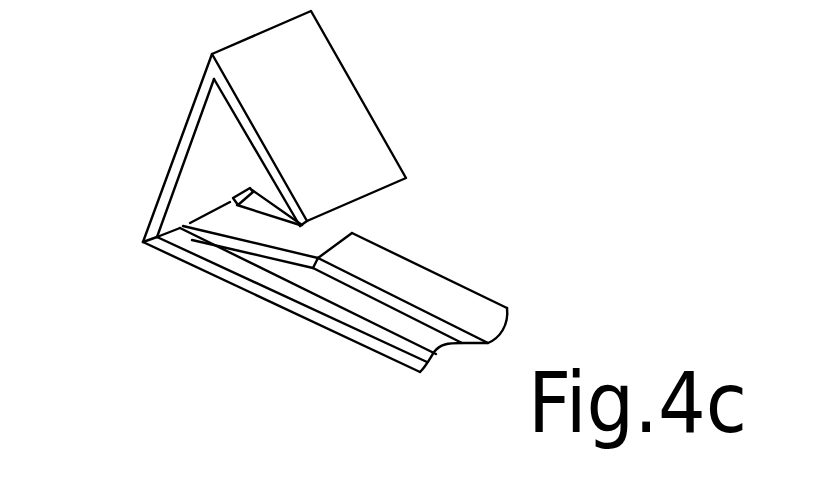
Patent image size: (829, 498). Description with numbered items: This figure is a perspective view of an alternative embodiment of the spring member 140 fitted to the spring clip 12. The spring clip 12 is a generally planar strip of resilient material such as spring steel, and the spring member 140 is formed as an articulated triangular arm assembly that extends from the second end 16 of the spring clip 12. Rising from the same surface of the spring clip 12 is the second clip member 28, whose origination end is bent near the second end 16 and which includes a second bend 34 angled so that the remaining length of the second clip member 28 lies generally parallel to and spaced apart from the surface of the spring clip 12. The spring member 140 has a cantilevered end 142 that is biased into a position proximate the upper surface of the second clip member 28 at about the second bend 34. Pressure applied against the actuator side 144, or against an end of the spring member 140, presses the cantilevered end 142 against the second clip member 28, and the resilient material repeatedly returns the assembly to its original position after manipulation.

The spring member 140 is at (145, 94).
The second end 16 is at (141, 241).
The actuator side 144 is at (332, 83).
The cantilevered end 142 is at (398, 182).
The second bend 34 is at (352, 233).
The second clip member 28 is at (414, 283).
The spring clip 12 is at (275, 302).